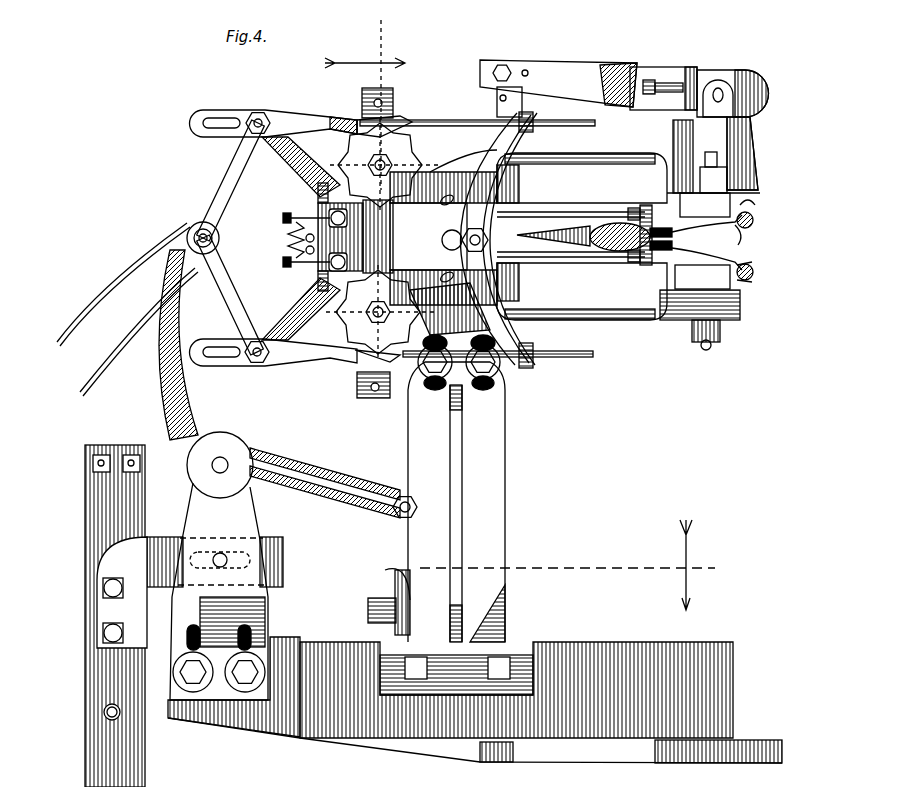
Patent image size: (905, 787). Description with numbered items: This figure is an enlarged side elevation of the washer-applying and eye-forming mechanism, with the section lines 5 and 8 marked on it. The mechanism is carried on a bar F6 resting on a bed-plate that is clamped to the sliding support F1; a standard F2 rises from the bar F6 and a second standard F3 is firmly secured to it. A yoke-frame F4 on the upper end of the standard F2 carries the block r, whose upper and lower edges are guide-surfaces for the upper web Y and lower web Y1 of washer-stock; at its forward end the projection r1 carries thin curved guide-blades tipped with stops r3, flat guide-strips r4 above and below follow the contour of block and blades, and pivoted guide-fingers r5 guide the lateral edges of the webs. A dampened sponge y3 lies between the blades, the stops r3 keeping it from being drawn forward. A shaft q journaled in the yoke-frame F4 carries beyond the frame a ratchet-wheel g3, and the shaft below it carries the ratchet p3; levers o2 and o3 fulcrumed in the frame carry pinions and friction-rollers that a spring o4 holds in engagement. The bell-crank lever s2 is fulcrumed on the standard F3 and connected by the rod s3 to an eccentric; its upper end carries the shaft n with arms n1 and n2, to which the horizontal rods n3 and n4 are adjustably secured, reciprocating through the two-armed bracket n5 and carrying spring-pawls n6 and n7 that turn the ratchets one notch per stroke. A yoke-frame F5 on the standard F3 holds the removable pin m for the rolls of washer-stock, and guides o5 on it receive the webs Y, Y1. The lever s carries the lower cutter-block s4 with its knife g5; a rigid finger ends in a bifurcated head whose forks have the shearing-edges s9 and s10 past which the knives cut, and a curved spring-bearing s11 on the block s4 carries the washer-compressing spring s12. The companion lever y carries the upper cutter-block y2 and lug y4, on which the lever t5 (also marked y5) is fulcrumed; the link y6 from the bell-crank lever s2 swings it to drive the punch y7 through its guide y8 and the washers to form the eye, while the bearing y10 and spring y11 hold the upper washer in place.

The section line 8 is at (365, 105).
The section line 5 is at (576, 565).
The sliding support F1 is at (454, 27).
The standard F2 is at (497, 455).
The standard F3 is at (207, 502).
The yoke-frame F4 is at (362, 103).
The yoke-frame F5 is at (97, 547).
The bar F6 is at (475, 685).
The removable pin m is at (100, 712).
The shaft n is at (193, 232).
The arm n1 is at (222, 176).
The arm n2 is at (233, 307).
The rod n3 is at (455, 120).
The rod n4 is at (570, 358).
The two-armed bracket n5 is at (508, 312).
The spring-pawl n6 is at (400, 120).
The spring-pawl n7 is at (357, 360).
The lever o2 is at (287, 215).
The lever o3 is at (288, 250).
The spring o4 is at (283, 239).
The guide o5 is at (320, 282).
The ratchet p3 is at (450, 309).
The shaft q is at (330, 160).
The cam wheel g3 is at (412, 140).
The bolt g5 is at (683, 300).
The block r is at (428, 238).
The projection r1 is at (523, 233).
The knobs or stops r3 is at (652, 262).
The guide-strips r4 is at (650, 262).
The guide-fingers r5 is at (636, 262).
The lever s is at (700, 305).
The bell-crank lever s2 is at (192, 405).
The rod s3 is at (400, 600).
The cutter-block s4 is at (702, 277).
The shearing-edge s9 is at (707, 230).
The shearing-edge s10 is at (707, 255).
The curved spring-bearing s11 is at (753, 280).
The washer-compressing spring s12 is at (740, 265).
The lever t5 is at (740, 232).
The upper jaw y is at (580, 172).
The block y2 is at (713, 205).
The dampened sponge y3 is at (607, 223).
The bracket y4 is at (770, 135).
The curved arm y5 is at (493, 153).
The bar y6 is at (648, 67).
The column y7 is at (680, 127).
The block y8 is at (700, 160).
The spring y10 is at (750, 197).
The screw y11 is at (753, 214).
The upper web Y is at (274, 149).
The lower web Y1 is at (274, 309).